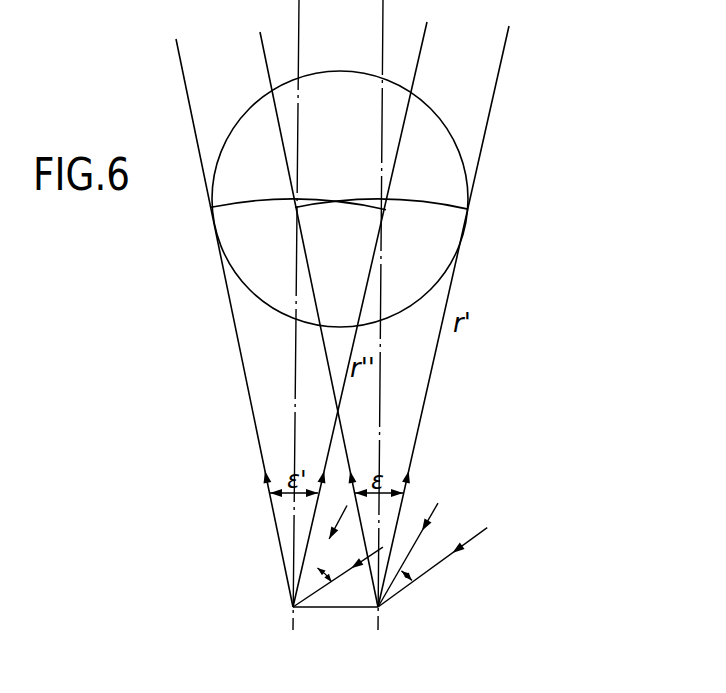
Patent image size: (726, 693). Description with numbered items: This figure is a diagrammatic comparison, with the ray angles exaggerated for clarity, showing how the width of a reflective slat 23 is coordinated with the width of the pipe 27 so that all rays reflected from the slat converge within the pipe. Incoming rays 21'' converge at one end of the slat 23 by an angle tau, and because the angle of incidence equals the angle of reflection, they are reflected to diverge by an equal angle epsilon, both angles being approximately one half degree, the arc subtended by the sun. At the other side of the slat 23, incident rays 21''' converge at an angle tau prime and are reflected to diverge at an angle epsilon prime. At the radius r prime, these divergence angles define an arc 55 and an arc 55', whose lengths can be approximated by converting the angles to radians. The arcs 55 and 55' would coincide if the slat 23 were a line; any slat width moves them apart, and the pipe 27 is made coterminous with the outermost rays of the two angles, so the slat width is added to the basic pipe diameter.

The pipe 27 is at (430, 107).
The arc 55 is at (381, 181).
The arc 55' is at (298, 180).
The slat 23 is at (353, 610).
The incoming rays 21'' is at (442, 549).
The incident rays 21''' is at (338, 550).